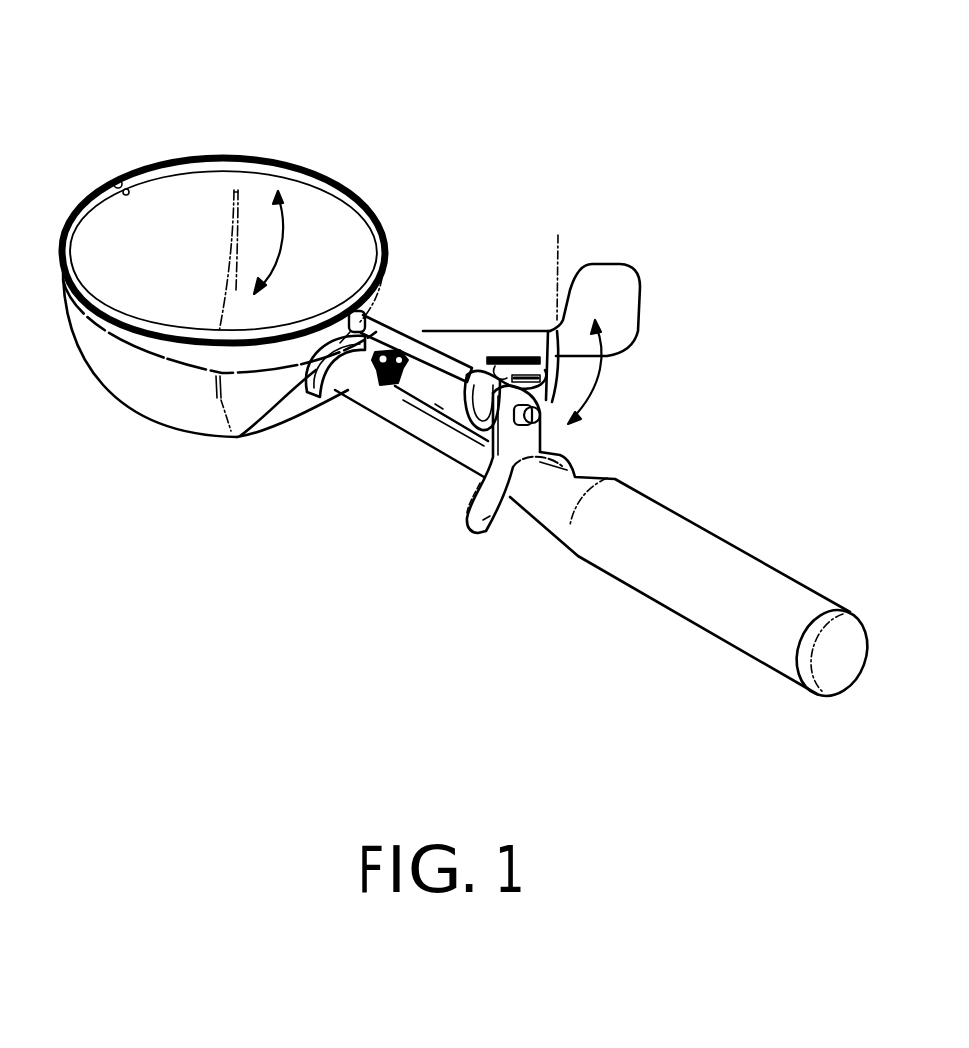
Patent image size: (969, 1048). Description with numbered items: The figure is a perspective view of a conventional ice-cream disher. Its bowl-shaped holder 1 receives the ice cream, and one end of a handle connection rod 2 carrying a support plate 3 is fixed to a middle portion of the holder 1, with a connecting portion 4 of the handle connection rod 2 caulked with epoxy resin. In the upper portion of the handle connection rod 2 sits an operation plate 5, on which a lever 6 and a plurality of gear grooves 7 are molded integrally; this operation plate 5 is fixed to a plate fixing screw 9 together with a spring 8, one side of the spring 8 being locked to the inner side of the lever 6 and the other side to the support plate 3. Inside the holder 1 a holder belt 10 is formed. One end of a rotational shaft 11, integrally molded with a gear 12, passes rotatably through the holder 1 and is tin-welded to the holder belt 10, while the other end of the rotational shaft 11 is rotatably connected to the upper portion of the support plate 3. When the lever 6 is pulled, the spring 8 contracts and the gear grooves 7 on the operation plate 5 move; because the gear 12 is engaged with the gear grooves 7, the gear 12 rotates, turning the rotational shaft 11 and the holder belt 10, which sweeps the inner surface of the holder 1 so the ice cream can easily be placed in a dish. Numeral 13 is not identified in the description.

The holder 1 is at (137, 378).
The handle connection rod 2 is at (462, 453).
The support plate 3 is at (478, 535).
The connecting portion 4 is at (268, 400).
The operation plate 5 is at (440, 404).
The lever 6 is at (622, 295).
The gear grooves 7 is at (523, 353).
The spring 8 is at (370, 400).
The plate fixing screw 9 is at (343, 397).
The holder belt 10 is at (272, 158).
The rotational shaft 11 is at (455, 350).
The gear 12 is at (500, 367).
The pin 13 is at (350, 310).